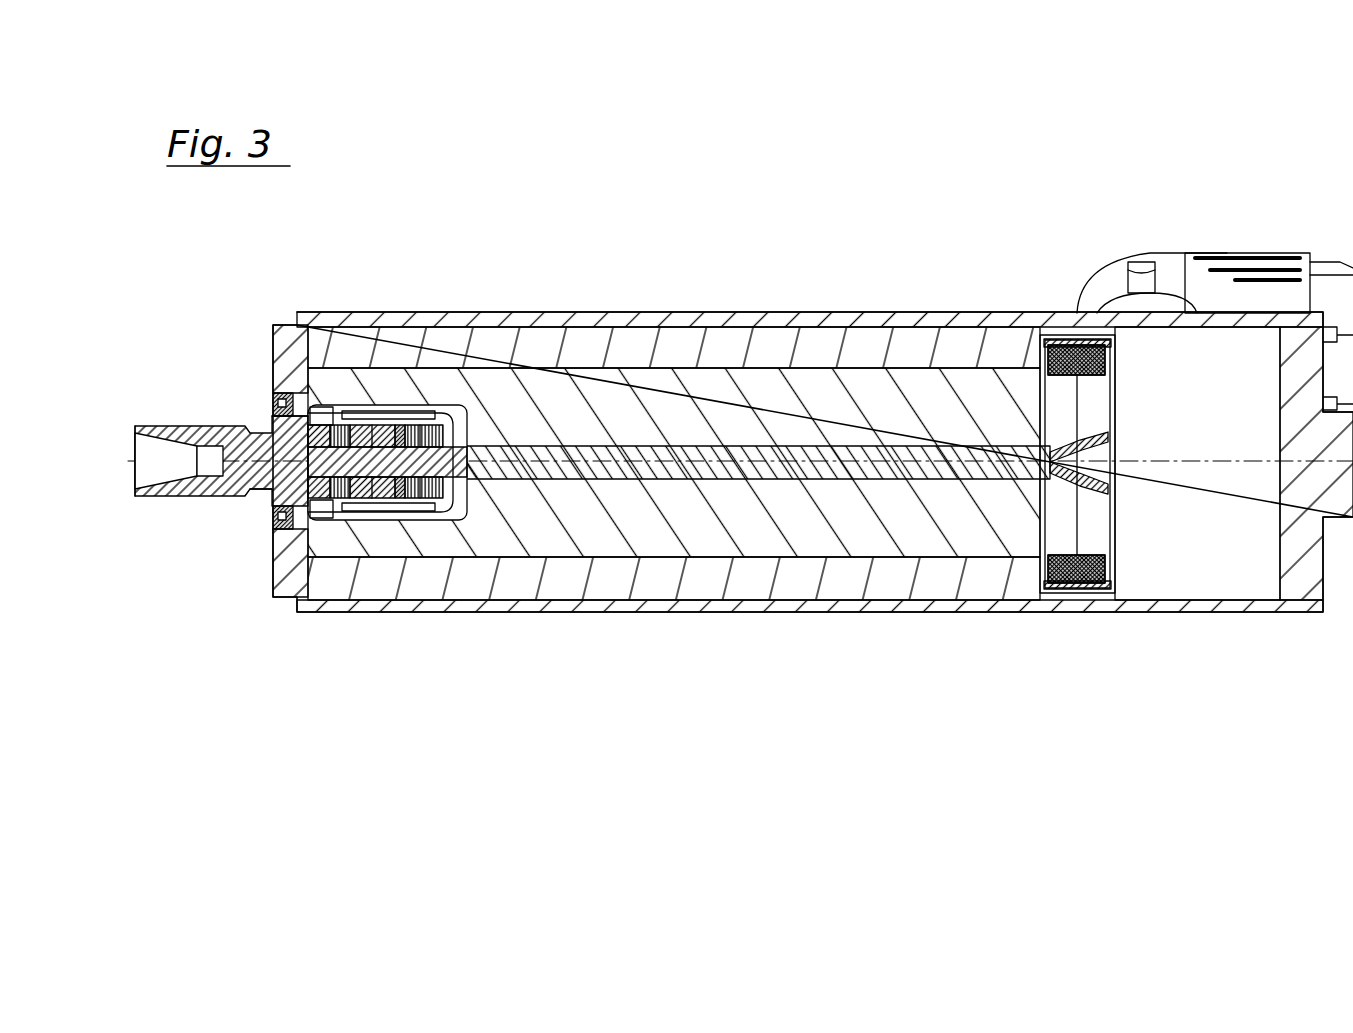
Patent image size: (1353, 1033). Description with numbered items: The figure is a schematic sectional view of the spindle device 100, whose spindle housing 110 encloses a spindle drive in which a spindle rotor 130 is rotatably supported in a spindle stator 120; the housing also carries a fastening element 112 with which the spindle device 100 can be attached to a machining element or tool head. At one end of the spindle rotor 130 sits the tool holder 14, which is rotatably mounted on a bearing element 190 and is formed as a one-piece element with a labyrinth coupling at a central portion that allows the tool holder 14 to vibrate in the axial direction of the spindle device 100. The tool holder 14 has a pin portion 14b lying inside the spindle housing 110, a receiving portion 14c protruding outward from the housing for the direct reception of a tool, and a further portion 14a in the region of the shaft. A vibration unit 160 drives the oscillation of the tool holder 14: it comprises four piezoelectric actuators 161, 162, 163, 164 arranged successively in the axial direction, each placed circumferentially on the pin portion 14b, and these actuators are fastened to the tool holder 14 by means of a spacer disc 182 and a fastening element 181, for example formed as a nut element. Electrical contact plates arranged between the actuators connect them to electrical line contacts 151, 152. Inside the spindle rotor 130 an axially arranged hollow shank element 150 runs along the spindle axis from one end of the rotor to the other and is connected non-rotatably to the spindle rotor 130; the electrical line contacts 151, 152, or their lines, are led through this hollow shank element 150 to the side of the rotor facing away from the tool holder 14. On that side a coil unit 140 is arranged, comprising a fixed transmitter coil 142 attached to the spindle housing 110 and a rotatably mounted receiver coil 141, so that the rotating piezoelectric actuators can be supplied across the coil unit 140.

The tool holder 14 is at (237, 412).
The shaft shoulder 14a is at (290, 533).
The pin portion 14b is at (430, 410).
The receiving portion 14c is at (133, 441).
The spindle device 100 is at (787, 283).
The spindle housing 110 is at (588, 310).
The fastening element 112 is at (1230, 287).
The spindle stator 120 is at (678, 343).
The spindle rotor 130 is at (905, 388).
The coil unit 140 is at (1133, 152).
The receiver coil 141 is at (1055, 333).
The transmitter coil 142 is at (1097, 330).
The hollow shank element 150 is at (555, 468).
The electrical line contact 151 is at (365, 415).
The electrical line contact 152 is at (352, 524).
The vibration unit 160 is at (300, 252).
The piezoelectric actuator 161 is at (341, 420).
The piezoelectric actuator 162 is at (360, 425).
The piezoelectric actuator 163 is at (392, 428).
The piezoelectric actuator 164 is at (420, 428).
The fastening element 181 is at (432, 496).
The spacer disc 182 is at (392, 500).
The bearing element 190 is at (273, 393).